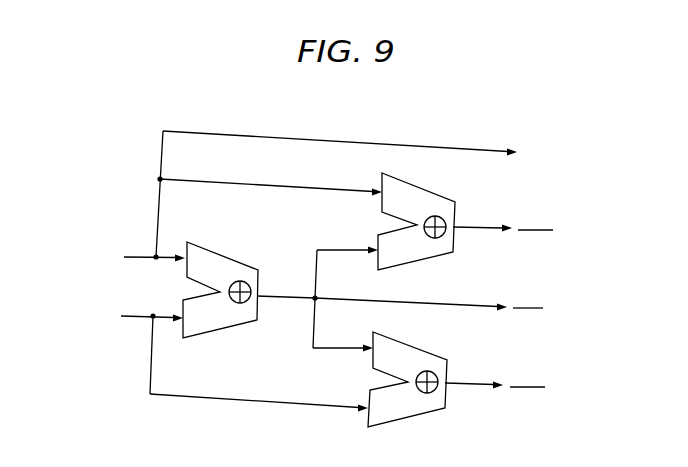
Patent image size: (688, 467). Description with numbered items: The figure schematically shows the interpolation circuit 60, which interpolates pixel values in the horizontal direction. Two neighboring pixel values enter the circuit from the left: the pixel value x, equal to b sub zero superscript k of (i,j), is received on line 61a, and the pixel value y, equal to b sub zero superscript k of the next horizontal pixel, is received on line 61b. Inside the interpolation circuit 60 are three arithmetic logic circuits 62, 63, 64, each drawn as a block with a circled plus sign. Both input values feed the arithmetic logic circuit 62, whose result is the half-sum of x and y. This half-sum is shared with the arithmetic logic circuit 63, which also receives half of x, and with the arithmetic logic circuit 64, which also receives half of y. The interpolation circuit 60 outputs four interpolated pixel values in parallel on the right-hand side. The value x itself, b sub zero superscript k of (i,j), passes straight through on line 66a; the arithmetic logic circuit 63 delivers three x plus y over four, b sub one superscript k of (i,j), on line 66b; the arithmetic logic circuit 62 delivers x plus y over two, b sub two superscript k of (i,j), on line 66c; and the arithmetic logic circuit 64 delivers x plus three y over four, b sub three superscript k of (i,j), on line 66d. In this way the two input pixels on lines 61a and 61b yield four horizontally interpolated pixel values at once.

The interpolation circuit 60 is at (186, 448).
The line 61a is at (135, 257).
The line 61b is at (141, 318).
The arithmetic logic circuit 62 is at (221, 253).
The arithmetic logic circuit 63 is at (417, 186).
The arithmetic logic circuit 64 is at (409, 344).
The line 66a is at (479, 151).
The line 66b is at (476, 227).
The line 66c is at (470, 305).
The line 66d is at (466, 383).